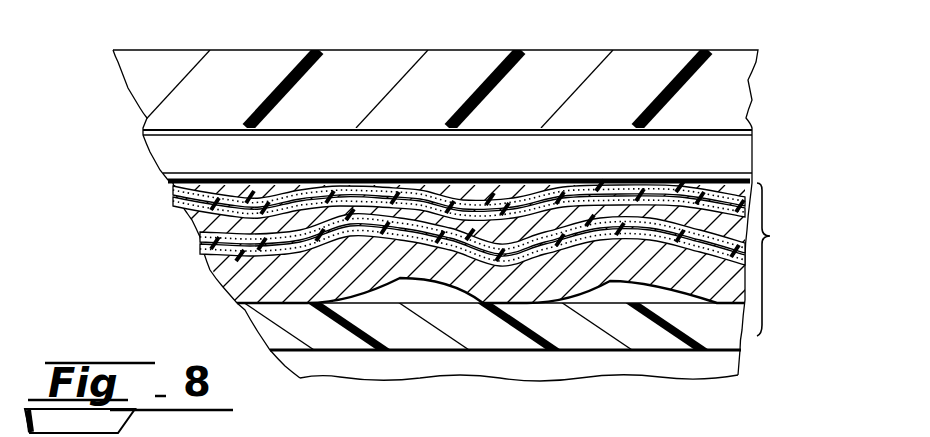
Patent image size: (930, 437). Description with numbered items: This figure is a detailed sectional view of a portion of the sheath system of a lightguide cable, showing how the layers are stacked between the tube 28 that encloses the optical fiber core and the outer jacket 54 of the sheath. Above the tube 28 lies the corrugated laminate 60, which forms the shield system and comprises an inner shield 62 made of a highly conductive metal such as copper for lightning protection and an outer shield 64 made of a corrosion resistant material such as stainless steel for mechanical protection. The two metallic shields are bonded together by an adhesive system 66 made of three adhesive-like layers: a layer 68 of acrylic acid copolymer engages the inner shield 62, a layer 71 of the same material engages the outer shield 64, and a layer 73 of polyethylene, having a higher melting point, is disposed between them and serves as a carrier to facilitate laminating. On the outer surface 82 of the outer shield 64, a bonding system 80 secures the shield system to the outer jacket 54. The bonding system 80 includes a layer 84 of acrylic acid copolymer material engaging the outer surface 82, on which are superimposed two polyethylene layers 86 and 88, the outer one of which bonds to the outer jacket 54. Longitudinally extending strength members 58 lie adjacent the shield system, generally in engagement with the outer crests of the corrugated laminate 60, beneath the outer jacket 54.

The tube 28 is at (268, 332).
The outer jacket 54 is at (357, 60).
The strength members 58 is at (407, 147).
The corrugated laminate 60 is at (763, 277).
The inner shield 62 is at (233, 287).
The outer shield 64 is at (419, 195).
The adhesive system 66 is at (414, 215).
The layer 68 is at (322, 245).
The layer 71 is at (270, 245).
The layer 73 is at (252, 245).
The bonding system 80 is at (168, 197).
The outer surface 82 is at (710, 210).
The layer 84 is at (557, 184).
The layer 86 is at (505, 184).
The layer 88 is at (483, 190).